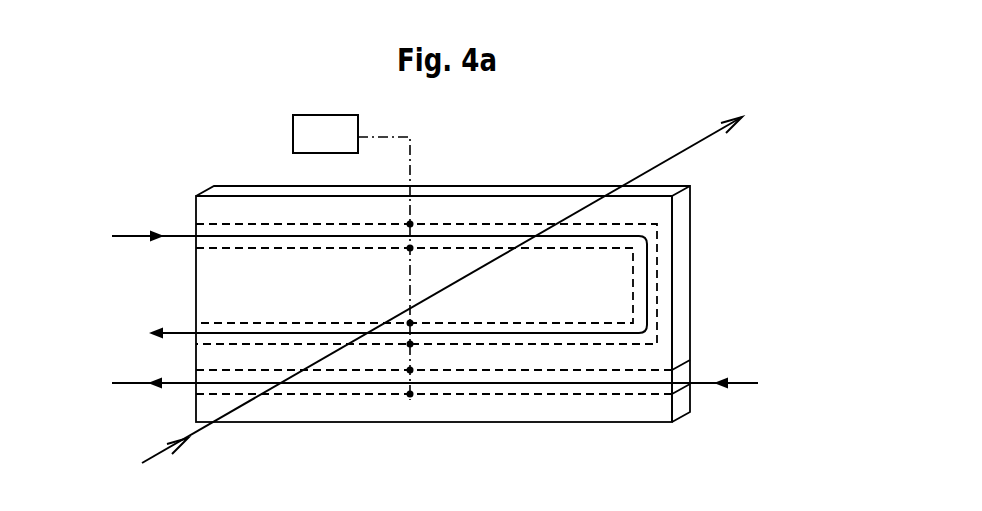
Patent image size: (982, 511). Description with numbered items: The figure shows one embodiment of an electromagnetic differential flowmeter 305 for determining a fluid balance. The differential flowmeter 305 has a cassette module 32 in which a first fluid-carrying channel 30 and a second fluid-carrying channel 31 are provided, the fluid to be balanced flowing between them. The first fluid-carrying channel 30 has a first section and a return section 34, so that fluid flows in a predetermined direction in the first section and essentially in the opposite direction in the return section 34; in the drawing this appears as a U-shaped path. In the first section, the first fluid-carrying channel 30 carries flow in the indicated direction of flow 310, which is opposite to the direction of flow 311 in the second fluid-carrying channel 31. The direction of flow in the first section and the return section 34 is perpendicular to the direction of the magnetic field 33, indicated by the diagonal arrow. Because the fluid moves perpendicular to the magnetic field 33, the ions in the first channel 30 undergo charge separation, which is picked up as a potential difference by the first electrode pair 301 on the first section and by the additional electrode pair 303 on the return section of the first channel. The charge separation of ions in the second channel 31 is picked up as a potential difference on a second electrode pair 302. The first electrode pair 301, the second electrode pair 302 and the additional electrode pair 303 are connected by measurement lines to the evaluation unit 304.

The first fluid-carrying channel 30 is at (232, 247).
The second fluid-carrying channel 31 is at (283, 396).
The cassette module 32 is at (693, 290).
The magnetic field 33 is at (660, 166).
The return section 34 is at (230, 322).
The first electrode pair 301 is at (410, 248).
The second electrode pair 302 is at (410, 394).
The additional electrode pair 303 is at (410, 323).
The evaluation unit 304 is at (293, 122).
The electromagnetic differential flowmeter 305 is at (718, 232).
The direction of flow 310 is at (124, 235).
The direction of flow 311 is at (130, 384).